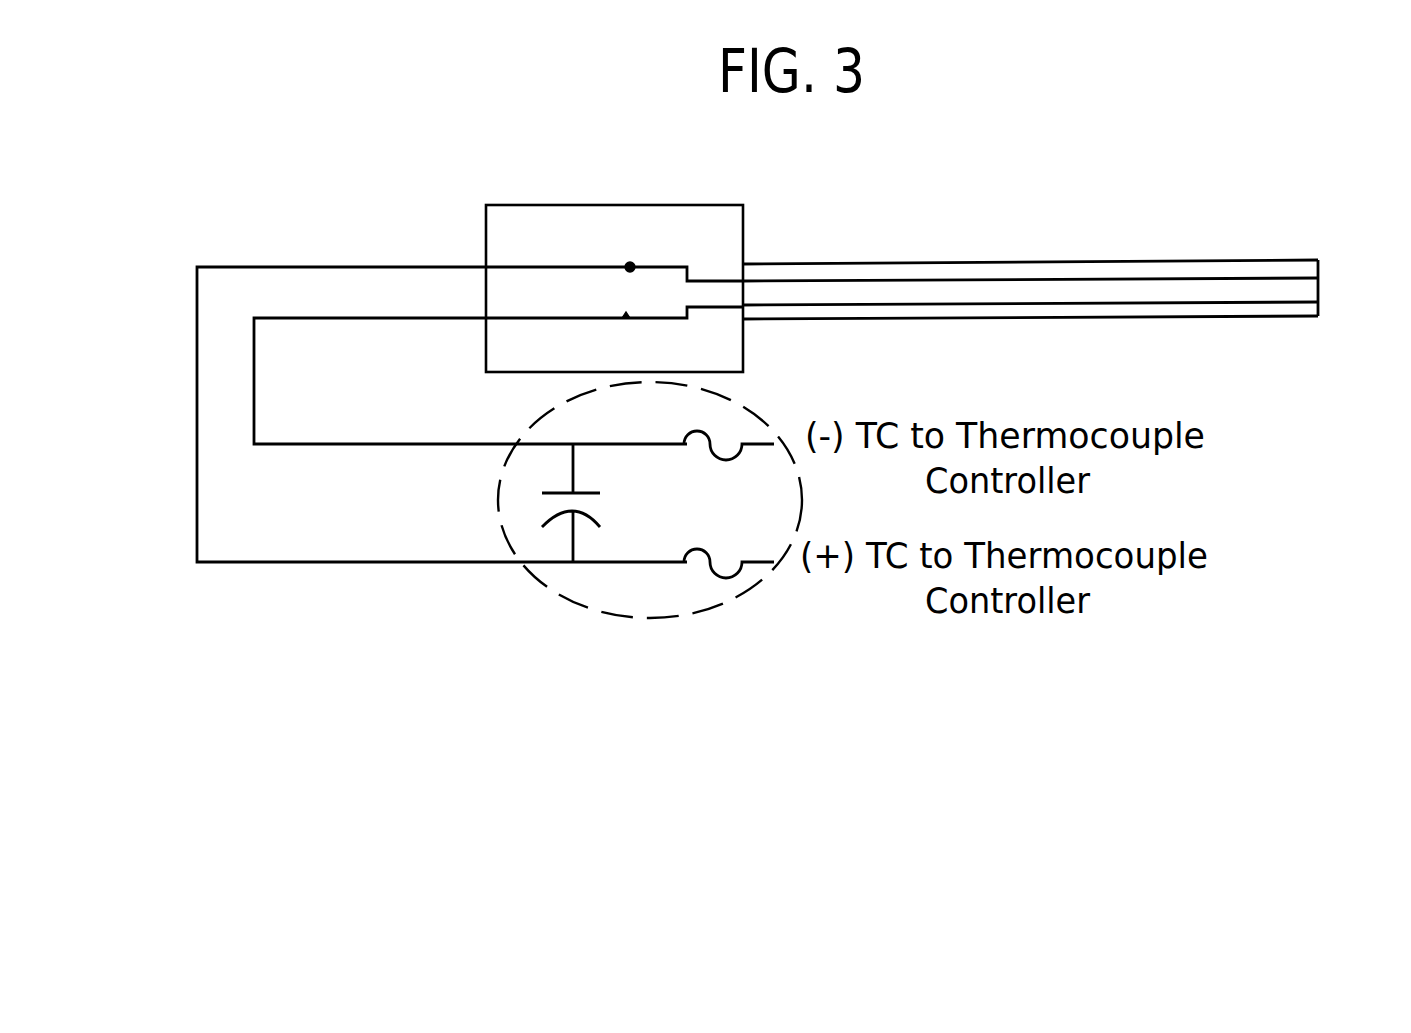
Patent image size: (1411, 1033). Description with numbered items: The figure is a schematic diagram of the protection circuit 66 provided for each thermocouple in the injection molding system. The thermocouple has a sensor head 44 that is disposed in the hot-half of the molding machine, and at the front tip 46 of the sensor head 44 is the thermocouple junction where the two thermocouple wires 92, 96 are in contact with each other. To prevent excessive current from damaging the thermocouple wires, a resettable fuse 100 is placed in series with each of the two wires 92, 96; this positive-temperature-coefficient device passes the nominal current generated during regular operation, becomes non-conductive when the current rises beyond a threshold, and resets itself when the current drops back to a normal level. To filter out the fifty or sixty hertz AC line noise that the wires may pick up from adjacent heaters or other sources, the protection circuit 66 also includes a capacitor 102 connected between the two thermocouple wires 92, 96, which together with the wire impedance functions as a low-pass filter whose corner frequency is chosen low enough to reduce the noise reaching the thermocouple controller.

The sensor head 44 is at (973, 262).
The temperature sensor tip 46 is at (1318, 287).
The protection circuit 66 is at (603, 615).
The thermocouple wire 92 is at (402, 446).
The thermocouple wire 96 is at (258, 562).
The resettable fuse 100 is at (750, 450).
The capacitor 102 is at (517, 555).